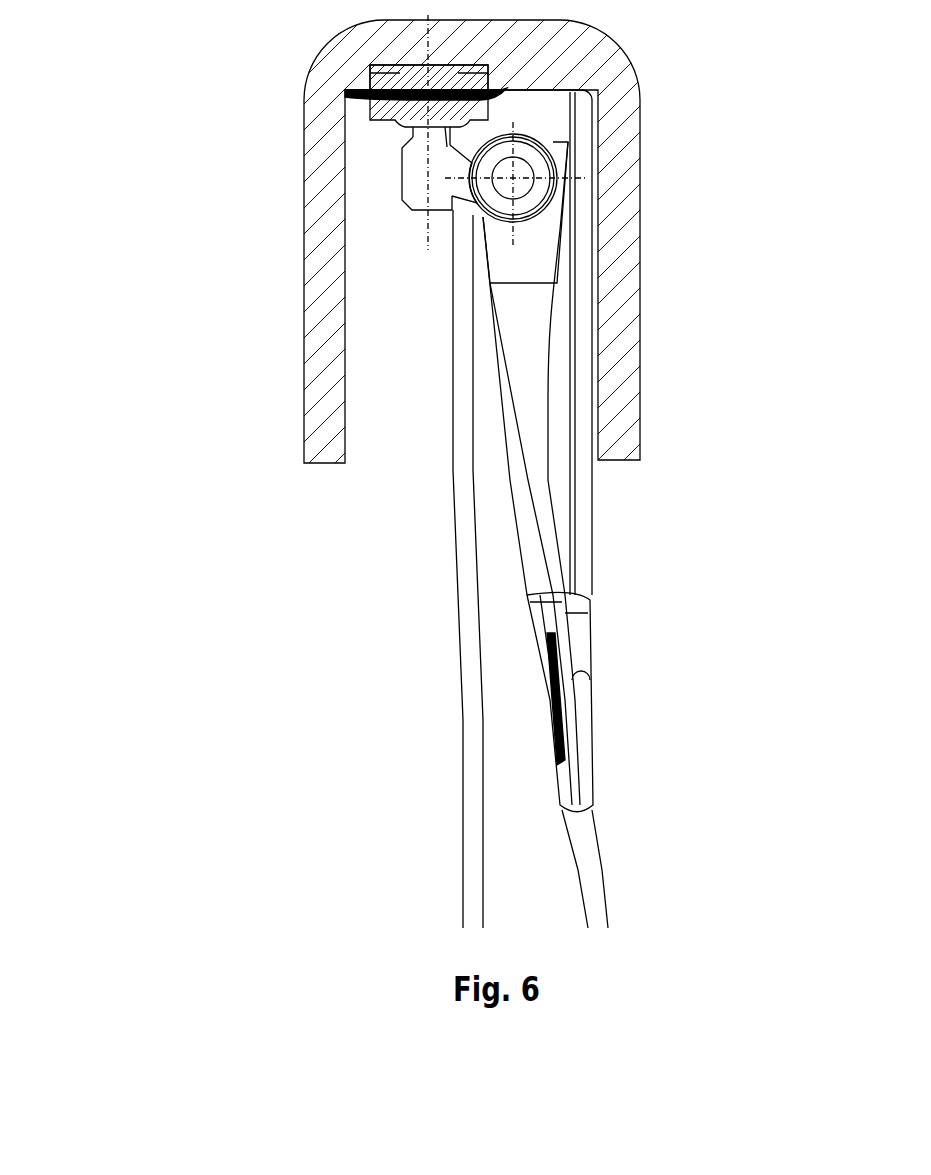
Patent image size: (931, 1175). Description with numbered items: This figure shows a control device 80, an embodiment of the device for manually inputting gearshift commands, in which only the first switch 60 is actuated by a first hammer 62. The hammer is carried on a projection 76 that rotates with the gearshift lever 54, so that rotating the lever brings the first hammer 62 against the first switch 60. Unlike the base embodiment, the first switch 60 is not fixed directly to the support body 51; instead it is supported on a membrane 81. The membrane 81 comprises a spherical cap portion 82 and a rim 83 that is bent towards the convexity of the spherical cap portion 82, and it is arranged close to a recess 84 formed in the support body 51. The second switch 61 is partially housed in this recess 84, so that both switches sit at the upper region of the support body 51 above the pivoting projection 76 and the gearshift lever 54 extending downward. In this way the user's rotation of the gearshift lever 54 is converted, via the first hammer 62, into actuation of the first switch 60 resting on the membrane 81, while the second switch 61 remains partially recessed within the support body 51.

The support body 51 is at (628, 328).
The gearshift lever 54 is at (582, 712).
The first switch 60 is at (397, 117).
The second switch 61 is at (410, 78).
The first hammer 62 is at (413, 192).
The projection 76 is at (457, 190).
The control device 80 is at (222, 562).
The membrane 81 is at (332, 84).
The spherical cap portion 82 is at (495, 100).
The rim 83 is at (507, 88).
The recess 84 is at (483, 64).